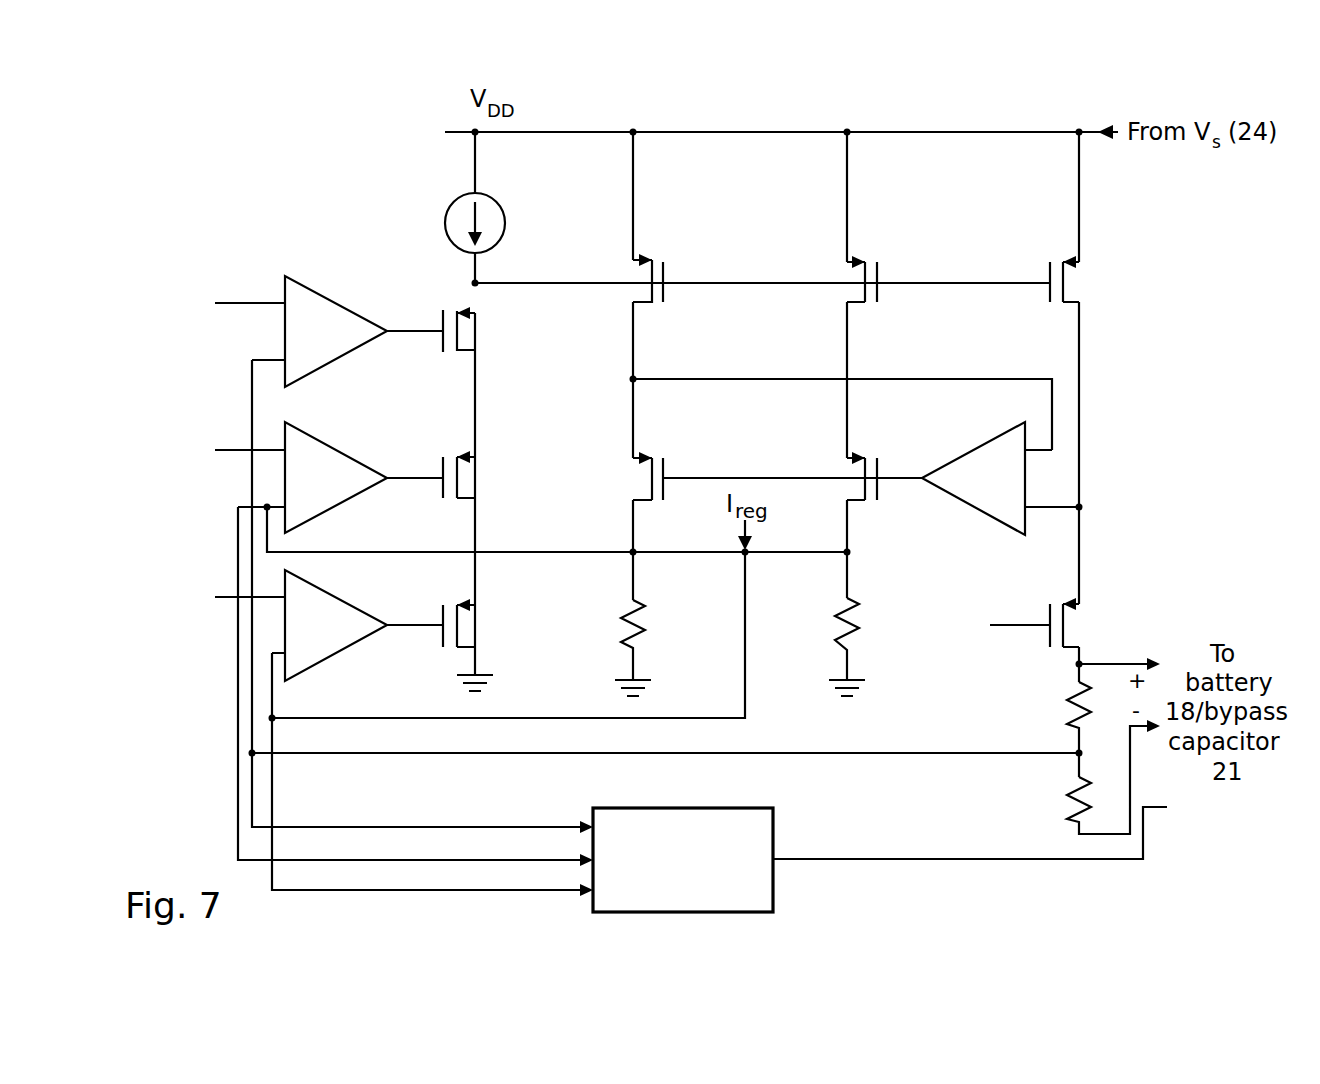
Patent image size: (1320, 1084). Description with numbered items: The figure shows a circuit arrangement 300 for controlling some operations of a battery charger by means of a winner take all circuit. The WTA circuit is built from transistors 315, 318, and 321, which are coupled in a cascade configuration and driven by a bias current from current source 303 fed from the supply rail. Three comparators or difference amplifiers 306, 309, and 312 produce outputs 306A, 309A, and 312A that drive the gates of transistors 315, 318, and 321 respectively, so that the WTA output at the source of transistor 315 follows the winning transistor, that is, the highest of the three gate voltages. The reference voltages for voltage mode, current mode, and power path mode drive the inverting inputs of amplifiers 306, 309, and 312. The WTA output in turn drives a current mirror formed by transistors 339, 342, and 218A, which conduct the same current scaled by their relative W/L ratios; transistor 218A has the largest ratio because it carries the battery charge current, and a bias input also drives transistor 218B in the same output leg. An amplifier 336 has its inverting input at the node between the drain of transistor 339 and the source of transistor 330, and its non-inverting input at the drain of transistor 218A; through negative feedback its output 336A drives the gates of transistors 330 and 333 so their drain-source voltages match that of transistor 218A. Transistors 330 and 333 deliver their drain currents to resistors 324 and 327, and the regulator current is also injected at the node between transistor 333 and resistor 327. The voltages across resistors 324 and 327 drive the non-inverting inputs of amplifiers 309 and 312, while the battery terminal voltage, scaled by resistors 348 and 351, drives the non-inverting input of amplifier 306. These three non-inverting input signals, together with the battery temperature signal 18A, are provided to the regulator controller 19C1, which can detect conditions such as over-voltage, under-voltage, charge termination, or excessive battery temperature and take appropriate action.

The circuit arrangement 300 is at (975, 102).
The current source 303 is at (497, 202).
The difference amplifier 306 is at (372, 270).
The output 306A is at (412, 328).
The difference amplifier 309 is at (335, 442).
The output 309A is at (412, 474).
The difference amplifier 312 is at (338, 656).
The output 312A is at (410, 623).
The transistor 315 is at (462, 353).
The transistor 318 is at (462, 499).
The transistor 321 is at (462, 648).
The resistor 324 is at (686, 604).
The resistor 327 is at (896, 604).
The transistor 330 is at (640, 502).
The transistor 333 is at (855, 502).
The amplifier 336 is at (990, 440).
The output 336A is at (905, 474).
The transistor 339 is at (640, 303).
The transistor 342 is at (855, 303).
The transistor 218A is at (1068, 303).
The transistor 218B is at (1120, 638).
The resistor 348 is at (1070, 696).
The resistor 351 is at (1068, 808).
The regulator controller 19C1 is at (775, 835).
The battery temperature signal 18A is at (960, 861).